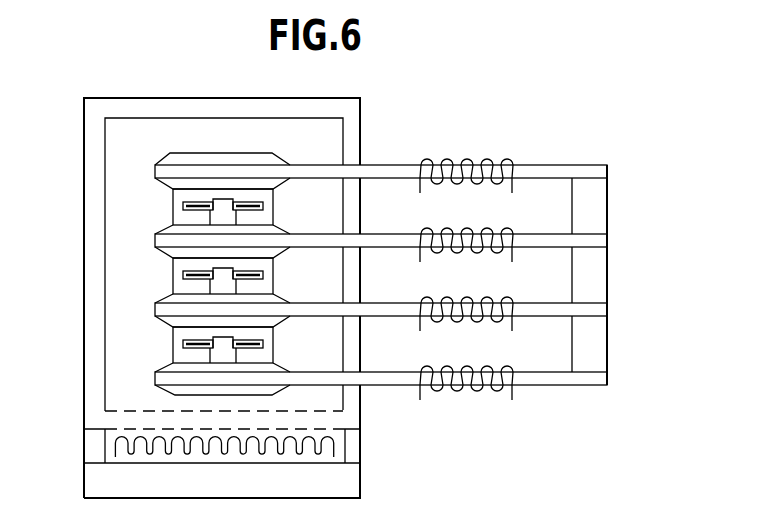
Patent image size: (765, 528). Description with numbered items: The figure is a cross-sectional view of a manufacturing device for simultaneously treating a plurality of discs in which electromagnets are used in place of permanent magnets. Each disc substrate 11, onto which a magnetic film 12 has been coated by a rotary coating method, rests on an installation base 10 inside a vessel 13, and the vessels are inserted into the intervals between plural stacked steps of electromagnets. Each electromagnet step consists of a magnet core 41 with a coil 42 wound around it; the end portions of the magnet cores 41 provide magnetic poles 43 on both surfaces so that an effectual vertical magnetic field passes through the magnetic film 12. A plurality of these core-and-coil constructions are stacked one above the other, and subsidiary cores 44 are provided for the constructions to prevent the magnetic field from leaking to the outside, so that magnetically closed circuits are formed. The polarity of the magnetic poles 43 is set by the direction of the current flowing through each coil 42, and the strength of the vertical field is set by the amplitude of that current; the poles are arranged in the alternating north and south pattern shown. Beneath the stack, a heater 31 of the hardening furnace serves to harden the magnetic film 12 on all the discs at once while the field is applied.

The installation base 10 is at (228, 287).
The disc substrate 11 is at (207, 275).
The magnetic film 12 is at (196, 272).
The vessel 13 is at (173, 283).
The heater 31 is at (110, 437).
The magnet core 41 is at (389, 167).
The coil 42 is at (468, 162).
The magnetic pole 43 is at (172, 160).
The subsidiary core 44 is at (596, 197).